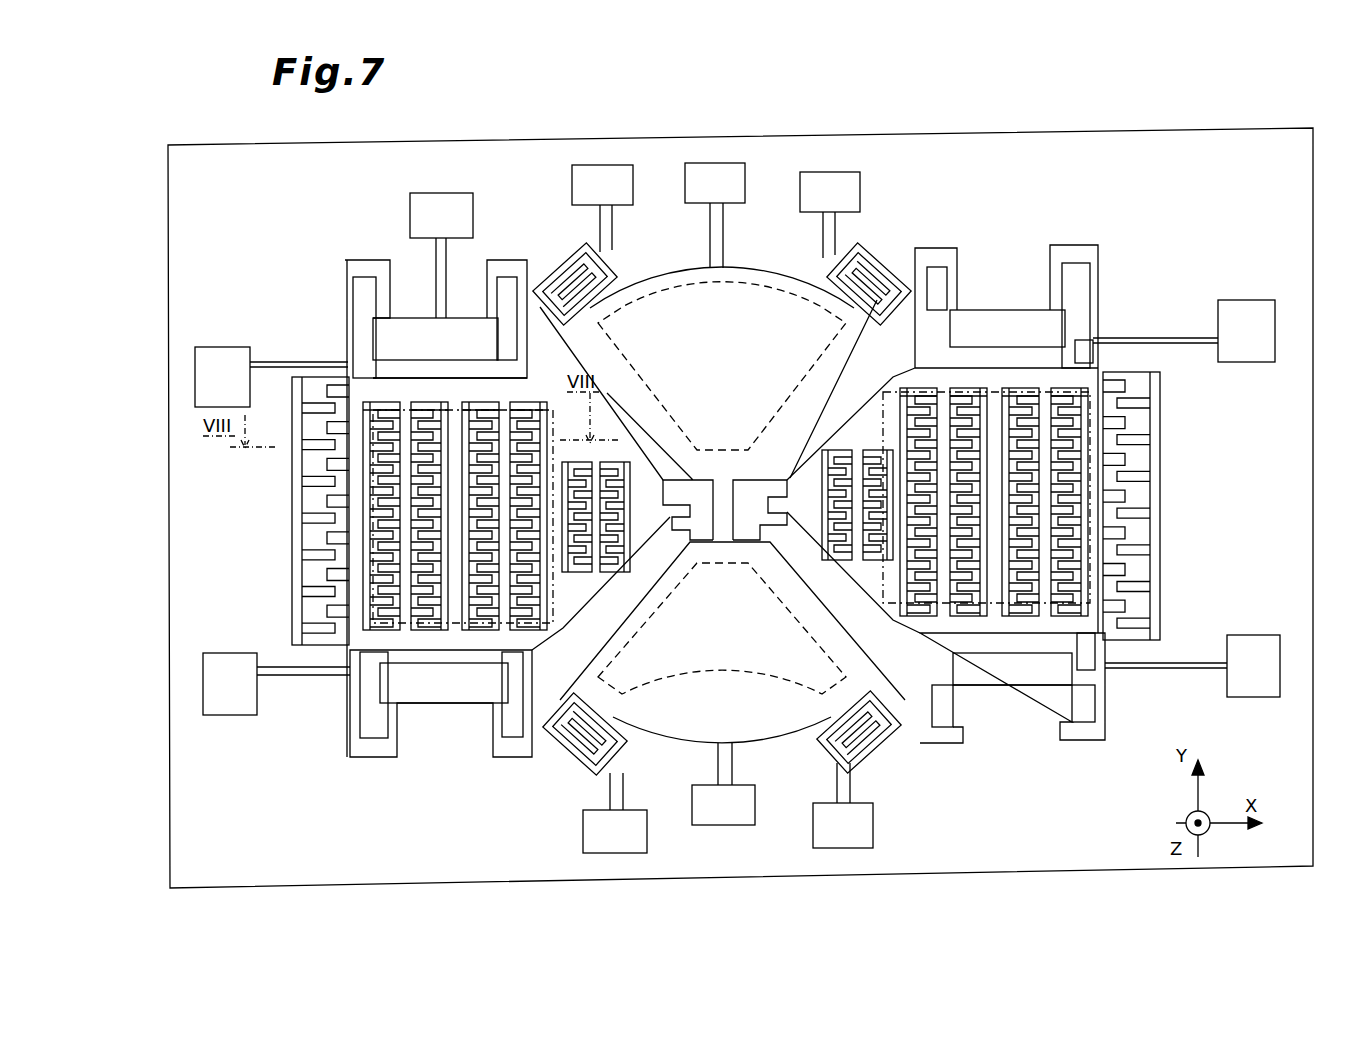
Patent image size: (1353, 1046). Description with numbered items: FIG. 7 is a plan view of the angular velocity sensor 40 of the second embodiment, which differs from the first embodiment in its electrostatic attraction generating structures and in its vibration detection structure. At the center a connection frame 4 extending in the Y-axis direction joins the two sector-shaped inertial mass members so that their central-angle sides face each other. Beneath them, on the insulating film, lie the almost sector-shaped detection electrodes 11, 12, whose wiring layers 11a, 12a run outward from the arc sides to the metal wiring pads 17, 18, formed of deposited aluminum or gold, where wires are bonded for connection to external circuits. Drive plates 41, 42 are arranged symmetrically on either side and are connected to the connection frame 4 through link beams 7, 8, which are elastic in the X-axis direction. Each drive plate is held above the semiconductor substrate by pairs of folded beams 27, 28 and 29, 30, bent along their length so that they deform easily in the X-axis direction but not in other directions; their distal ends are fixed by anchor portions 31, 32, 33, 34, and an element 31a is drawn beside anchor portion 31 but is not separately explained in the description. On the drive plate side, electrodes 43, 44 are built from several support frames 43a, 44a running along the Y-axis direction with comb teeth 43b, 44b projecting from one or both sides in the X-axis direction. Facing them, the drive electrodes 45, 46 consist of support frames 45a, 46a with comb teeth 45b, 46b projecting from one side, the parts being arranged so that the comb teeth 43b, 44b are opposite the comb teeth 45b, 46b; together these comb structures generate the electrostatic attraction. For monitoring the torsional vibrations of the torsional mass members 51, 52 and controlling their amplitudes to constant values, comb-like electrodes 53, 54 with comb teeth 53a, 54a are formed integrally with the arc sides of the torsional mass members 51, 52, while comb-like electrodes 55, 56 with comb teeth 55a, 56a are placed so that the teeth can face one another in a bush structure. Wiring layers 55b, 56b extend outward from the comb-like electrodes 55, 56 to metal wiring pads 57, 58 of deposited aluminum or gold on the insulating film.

The connection frame 4 is at (738, 540).
The link beam 7 is at (690, 540).
The link beam 8 is at (765, 478).
The detection electrode 11 is at (675, 283).
The wiring layer 11a is at (710, 228).
The detection electrode 12 is at (662, 745).
The wiring layer 12a is at (735, 766).
The metal wiring pad 17 is at (720, 165).
The metal wiring pad 18 is at (730, 818).
The folded beam 27 is at (345, 283).
The folded beam 28 is at (350, 733).
The folded beam 29 is at (1098, 280).
The folded beam 30 is at (1105, 708).
The anchor portion 31 is at (405, 325).
The bar pad 31a is at (438, 255).
The anchor portion 32 is at (425, 705).
The anchor portion 33 is at (1010, 320).
The anchor portion 34 is at (1010, 680).
The angular velocity sensor 40 is at (604, 900).
The drive plate 41 is at (460, 382).
The drive plate 42 is at (1040, 375).
The electrode 43 is at (390, 478).
The support frame 43a is at (385, 650).
The comb teeth 43b is at (380, 612).
The electrode 44 is at (1060, 512).
The support frame 44a is at (970, 590).
The comb teeth 44b is at (1070, 418).
The drive electrode 45 is at (335, 580).
The support frame 45a is at (292, 505).
The comb teeth 45b is at (318, 380).
The drive electrode 46 is at (1157, 585).
The support frame 46a is at (1157, 455).
The comb teeth 46b is at (1130, 632).
The torsional mass member 51 is at (795, 278).
The torsional mass member 52 is at (748, 800).
The comb-like electrode 53 is at (560, 310).
The comb teeth 53a is at (565, 265).
The comb-like electrode 54 is at (560, 712).
The comb teeth 54a is at (560, 765).
The comb-like electrode 55 is at (615, 300).
The comb teeth 55a is at (612, 300).
The wiring layer 55b is at (600, 215).
The comb-like electrode 56 is at (600, 770).
The comb teeth 56a is at (620, 695).
The wiring layer 56b is at (605, 815).
The metal wiring pad 57 is at (590, 168).
The metal wiring pad 58 is at (640, 845).